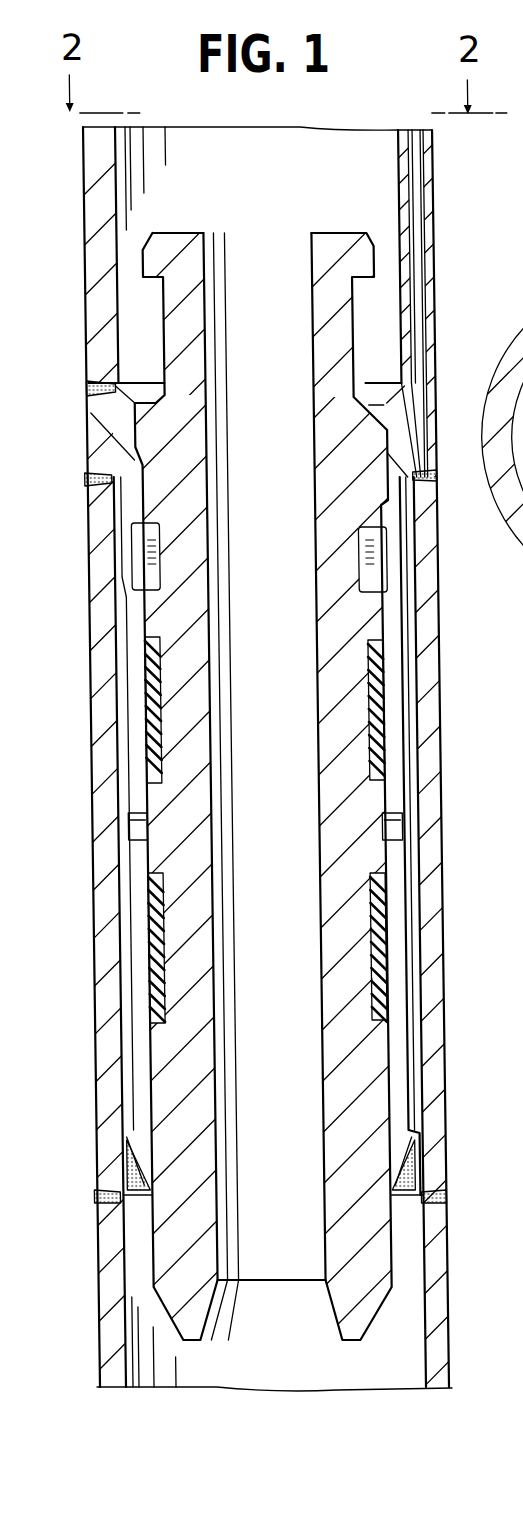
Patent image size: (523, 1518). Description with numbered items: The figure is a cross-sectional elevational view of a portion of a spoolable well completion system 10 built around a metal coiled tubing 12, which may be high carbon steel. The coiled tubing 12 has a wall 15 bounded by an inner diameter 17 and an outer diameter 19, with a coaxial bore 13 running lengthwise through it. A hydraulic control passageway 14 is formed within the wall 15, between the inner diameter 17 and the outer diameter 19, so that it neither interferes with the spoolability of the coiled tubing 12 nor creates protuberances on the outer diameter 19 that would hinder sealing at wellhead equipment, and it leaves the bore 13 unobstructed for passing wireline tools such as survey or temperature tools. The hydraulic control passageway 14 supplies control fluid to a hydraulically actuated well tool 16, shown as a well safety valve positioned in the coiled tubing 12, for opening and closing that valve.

The spoolable well completion system 10 is at (443, 294).
The coiled tubing 12 is at (447, 145).
The bore 13 is at (282, 165).
The hydraulic control passageway 14 is at (420, 197).
The wall 15 is at (98, 195).
The hydraulically actuated well tool 16 is at (325, 705).
The inner diameter 17 is at (398, 153).
The outer diameter 19 is at (437, 178).